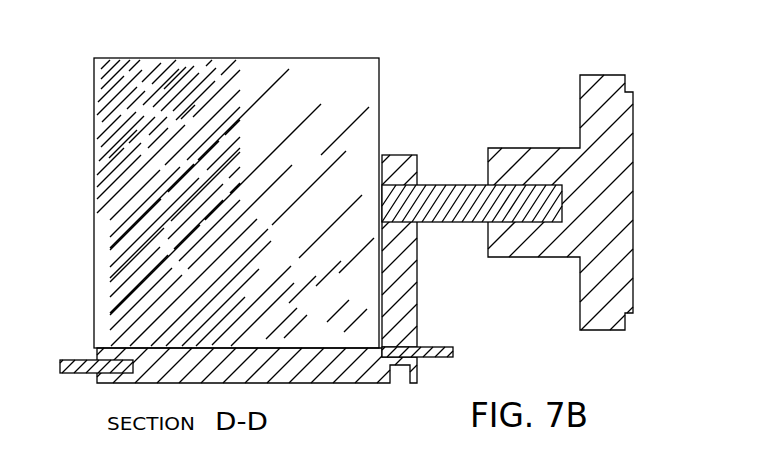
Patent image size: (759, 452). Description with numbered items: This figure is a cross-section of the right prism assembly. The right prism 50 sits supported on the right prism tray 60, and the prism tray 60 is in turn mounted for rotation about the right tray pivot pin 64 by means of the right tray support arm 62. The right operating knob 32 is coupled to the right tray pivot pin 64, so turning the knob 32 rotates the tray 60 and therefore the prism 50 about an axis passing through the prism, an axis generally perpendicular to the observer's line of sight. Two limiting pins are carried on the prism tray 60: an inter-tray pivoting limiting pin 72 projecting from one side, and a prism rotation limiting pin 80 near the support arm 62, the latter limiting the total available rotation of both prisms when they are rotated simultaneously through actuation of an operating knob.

The right prism 50 is at (262, 72).
The right prism tray 60 is at (325, 375).
The inter-tray pivoting limiting pin 72 is at (80, 375).
The right tray support arm 62 is at (400, 163).
The right operating knob 32 is at (633, 167).
The right tray pivot pin 64 is at (450, 185).
The prism rotation limiting pin 80 is at (433, 346).